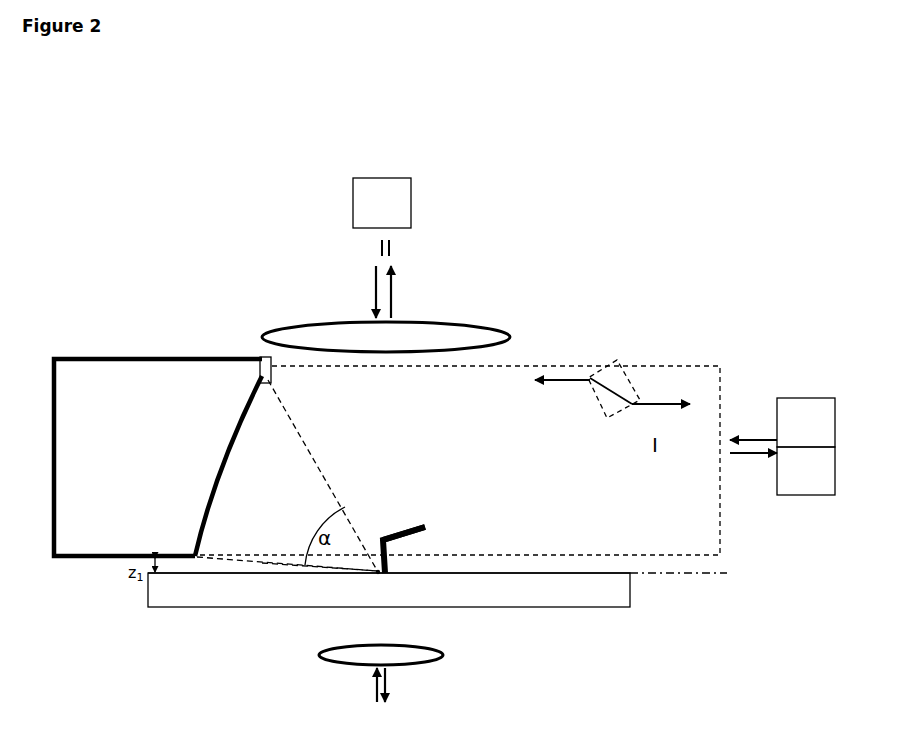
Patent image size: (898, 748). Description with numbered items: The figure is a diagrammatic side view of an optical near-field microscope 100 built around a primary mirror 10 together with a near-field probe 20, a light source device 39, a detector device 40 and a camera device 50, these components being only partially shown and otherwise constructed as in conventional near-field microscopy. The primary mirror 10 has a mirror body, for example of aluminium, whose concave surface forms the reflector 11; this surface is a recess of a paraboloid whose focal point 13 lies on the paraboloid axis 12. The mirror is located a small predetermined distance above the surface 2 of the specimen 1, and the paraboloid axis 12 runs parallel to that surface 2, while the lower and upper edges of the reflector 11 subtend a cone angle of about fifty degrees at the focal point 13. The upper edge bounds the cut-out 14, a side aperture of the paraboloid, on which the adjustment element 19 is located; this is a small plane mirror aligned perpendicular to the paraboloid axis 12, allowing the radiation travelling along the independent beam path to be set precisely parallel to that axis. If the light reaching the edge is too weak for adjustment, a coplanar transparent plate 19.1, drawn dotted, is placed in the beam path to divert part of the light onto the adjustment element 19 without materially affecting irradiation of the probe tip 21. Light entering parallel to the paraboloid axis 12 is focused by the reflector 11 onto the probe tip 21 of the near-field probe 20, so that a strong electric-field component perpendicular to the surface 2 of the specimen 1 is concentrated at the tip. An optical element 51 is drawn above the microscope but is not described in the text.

The specimen 1 is at (258, 597).
The surface of the specimen 2 is at (540, 573).
The primary mirror 10 is at (124, 462).
The reflector 11 is at (203, 498).
The paraboloid axis 12 is at (712, 573).
The focal point 13 is at (376, 574).
The cut-out 14 is at (321, 395).
The adjustment element 19 is at (258, 357).
The coplanar transparent plate 19.1 is at (632, 378).
The near-field probe 20 is at (404, 524).
The probe tip 21 is at (398, 552).
The light source device 39 is at (806, 422).
The detector device 40 is at (806, 471).
The camera device 50 is at (382, 203).
The lens 51 is at (340, 325).
The optical near-field microscope 100 is at (589, 326).